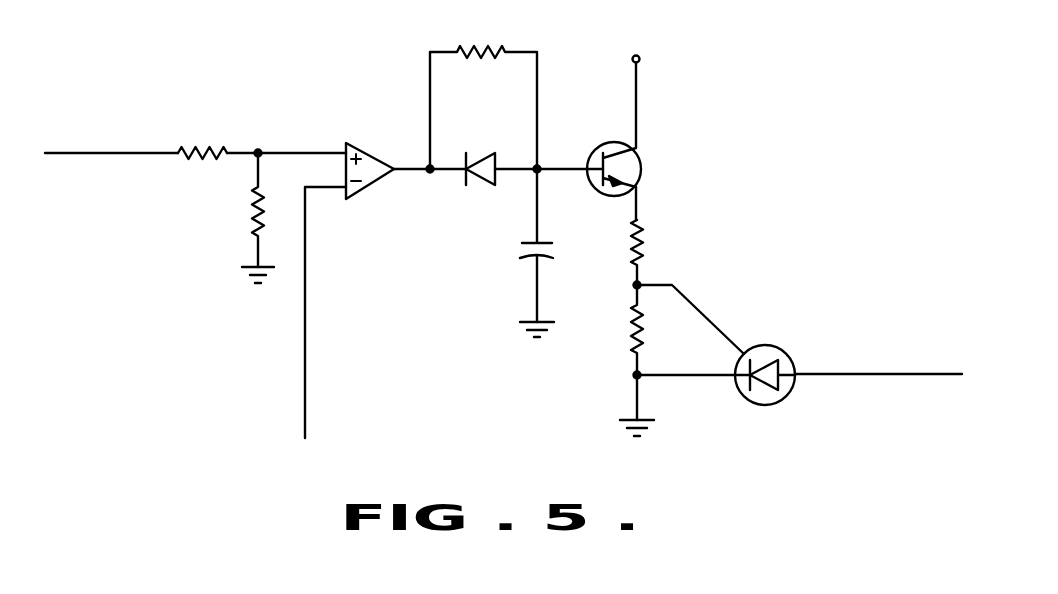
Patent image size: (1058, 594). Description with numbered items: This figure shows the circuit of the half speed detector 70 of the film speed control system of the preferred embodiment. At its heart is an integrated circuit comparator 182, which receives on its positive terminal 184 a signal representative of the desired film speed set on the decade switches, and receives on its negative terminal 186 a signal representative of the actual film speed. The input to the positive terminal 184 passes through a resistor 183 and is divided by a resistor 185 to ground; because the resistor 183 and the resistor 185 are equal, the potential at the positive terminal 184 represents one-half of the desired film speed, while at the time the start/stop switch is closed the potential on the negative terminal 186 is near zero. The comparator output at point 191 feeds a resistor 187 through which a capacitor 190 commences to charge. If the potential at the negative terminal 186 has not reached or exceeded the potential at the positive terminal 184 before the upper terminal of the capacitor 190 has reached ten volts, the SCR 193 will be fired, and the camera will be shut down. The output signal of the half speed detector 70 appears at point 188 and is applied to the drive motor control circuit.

The half speed detector 70 is at (699, 67).
The integrated circuit comparator 182 is at (367, 147).
The resistor 183 is at (219, 141).
The positive terminal 184 is at (311, 150).
The resistor 185 is at (253, 212).
The negative terminal 186 is at (307, 290).
The resistor 187 is at (482, 45).
The point 188 is at (820, 373).
The capacitor 190 is at (522, 252).
The amplifier output 191 is at (409, 172).
The SCR 193 is at (768, 344).